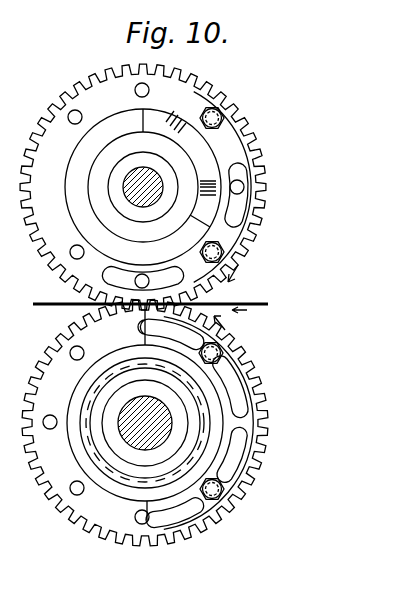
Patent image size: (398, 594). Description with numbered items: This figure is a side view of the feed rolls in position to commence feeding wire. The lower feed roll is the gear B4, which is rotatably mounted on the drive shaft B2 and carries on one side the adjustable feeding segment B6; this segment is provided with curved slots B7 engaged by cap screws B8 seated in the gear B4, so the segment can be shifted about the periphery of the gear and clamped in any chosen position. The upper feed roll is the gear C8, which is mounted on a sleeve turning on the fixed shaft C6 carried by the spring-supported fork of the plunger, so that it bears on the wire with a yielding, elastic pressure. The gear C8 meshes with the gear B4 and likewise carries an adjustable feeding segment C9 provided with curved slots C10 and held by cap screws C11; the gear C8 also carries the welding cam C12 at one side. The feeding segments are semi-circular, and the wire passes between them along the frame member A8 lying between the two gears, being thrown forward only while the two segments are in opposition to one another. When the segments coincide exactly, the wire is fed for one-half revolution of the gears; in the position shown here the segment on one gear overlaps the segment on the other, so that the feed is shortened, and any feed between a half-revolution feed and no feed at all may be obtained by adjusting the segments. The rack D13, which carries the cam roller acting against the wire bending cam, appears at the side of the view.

The gear C8 is at (75, 91).
The fixed shaft C6 is at (127, 173).
The welding cam C12 is at (203, 158).
The adjustable feeding segment C9 is at (232, 225).
The curved slots C10 is at (243, 163).
The cap screws C11 is at (214, 112).
The bar A8 is at (257, 303).
The gear B4 is at (111, 534).
The drive shaft B2 is at (132, 442).
The adjustable feeding segment B6 is at (262, 412).
The curved slots B7 is at (247, 378).
The cap screws B8 is at (225, 336).
The rack D13 is at (0, 352).